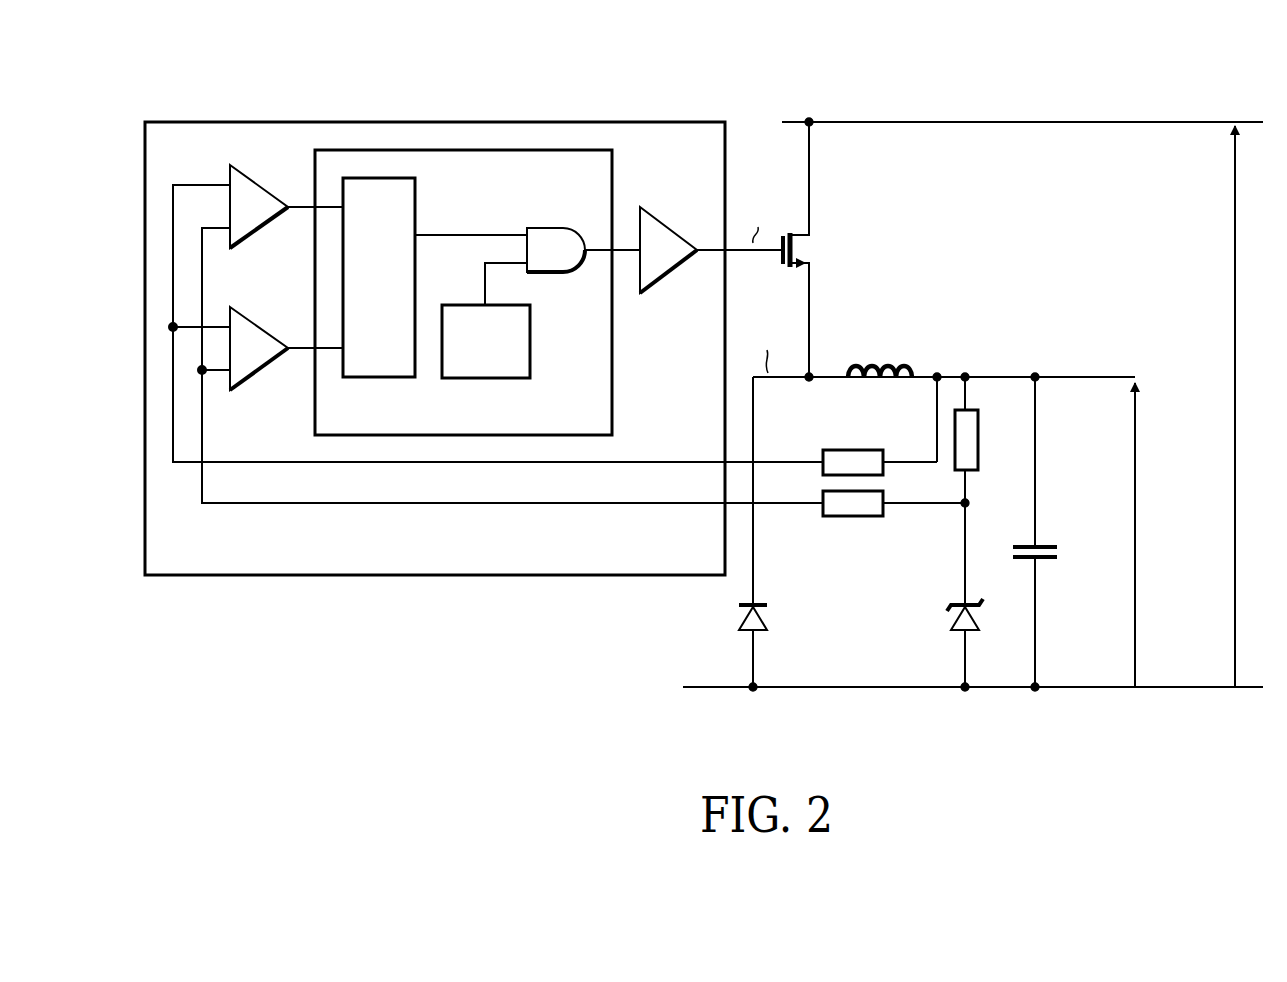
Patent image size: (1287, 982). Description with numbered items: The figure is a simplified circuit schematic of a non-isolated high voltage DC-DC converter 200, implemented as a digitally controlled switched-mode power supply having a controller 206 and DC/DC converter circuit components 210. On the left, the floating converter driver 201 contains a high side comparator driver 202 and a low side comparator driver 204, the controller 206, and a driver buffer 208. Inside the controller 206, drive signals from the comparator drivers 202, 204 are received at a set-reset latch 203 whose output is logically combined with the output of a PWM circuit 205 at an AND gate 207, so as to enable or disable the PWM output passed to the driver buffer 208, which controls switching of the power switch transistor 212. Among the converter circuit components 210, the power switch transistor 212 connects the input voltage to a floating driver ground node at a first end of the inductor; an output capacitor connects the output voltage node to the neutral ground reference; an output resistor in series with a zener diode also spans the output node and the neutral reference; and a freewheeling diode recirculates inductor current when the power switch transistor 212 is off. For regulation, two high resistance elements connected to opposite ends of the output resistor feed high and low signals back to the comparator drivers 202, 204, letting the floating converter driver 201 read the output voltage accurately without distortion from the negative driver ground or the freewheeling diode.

The non-isolated high voltage DC-DC converter 200 is at (234, 66).
The floating converter driver 201 is at (614, 560).
The high side comparator driver 202 is at (259, 179).
The set-reset latch 203 is at (396, 305).
The low side comparator driver 204 is at (259, 319).
The PWM circuit 205 is at (501, 370).
The controller 206 is at (544, 418).
The AND gate 207 is at (548, 227).
The driver buffer 208 is at (667, 226).
The DC/DC converter circuit components 210 is at (771, 104).
The power switch transistor 212 is at (800, 247).